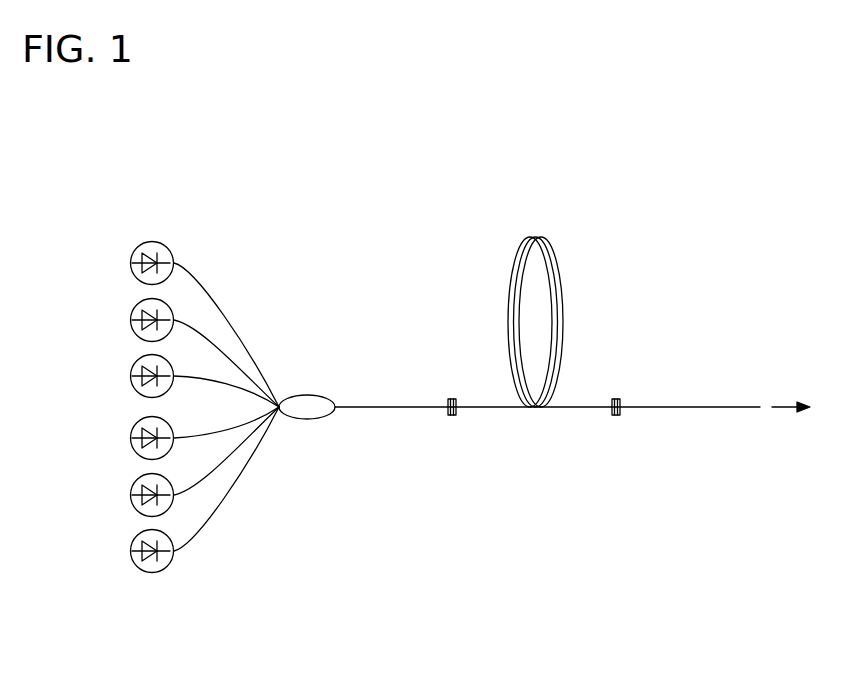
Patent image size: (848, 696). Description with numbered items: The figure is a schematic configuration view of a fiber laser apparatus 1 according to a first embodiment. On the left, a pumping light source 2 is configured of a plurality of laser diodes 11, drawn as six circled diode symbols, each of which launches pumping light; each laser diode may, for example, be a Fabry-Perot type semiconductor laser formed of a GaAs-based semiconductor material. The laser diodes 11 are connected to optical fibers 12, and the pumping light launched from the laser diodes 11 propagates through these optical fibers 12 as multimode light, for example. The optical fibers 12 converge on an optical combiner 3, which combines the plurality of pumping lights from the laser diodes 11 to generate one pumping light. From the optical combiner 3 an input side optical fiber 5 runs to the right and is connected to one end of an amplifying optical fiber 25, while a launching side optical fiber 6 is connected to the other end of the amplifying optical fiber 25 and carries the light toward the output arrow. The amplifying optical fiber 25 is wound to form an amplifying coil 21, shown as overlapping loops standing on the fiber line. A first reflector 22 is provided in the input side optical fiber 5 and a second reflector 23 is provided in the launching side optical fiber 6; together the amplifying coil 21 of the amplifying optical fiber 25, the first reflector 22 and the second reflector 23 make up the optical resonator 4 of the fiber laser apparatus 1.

The fiber laser apparatus 1 is at (746, 174).
The pumping light source 2 is at (129, 204).
The laser diodes 11 is at (130, 263).
The optical fibers 12 is at (208, 298).
The optical combiner 3 is at (322, 394).
The input side optical fiber 5 is at (393, 406).
The optical resonator 4 is at (533, 480).
The first reflector 22 is at (452, 418).
The amplifying coil 21 is at (533, 212).
The amplifying optical fiber 25 is at (583, 406).
The second reflector 23 is at (616, 418).
The launching side optical fiber 6 is at (706, 406).